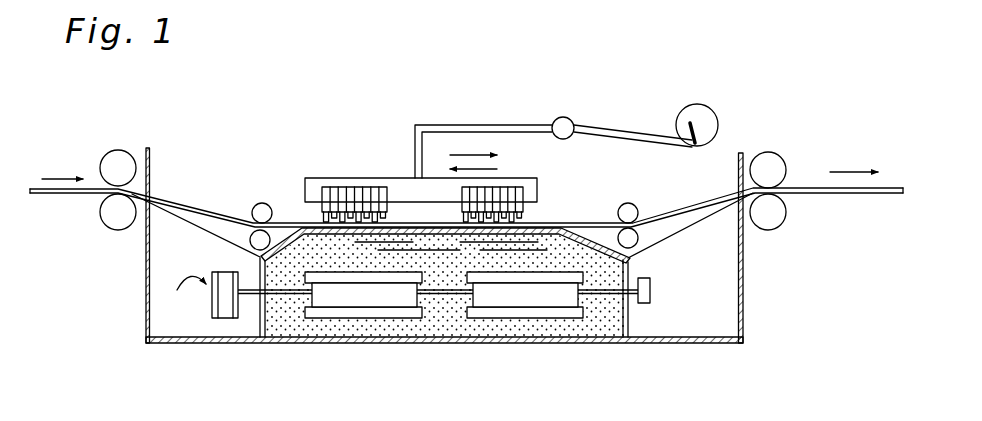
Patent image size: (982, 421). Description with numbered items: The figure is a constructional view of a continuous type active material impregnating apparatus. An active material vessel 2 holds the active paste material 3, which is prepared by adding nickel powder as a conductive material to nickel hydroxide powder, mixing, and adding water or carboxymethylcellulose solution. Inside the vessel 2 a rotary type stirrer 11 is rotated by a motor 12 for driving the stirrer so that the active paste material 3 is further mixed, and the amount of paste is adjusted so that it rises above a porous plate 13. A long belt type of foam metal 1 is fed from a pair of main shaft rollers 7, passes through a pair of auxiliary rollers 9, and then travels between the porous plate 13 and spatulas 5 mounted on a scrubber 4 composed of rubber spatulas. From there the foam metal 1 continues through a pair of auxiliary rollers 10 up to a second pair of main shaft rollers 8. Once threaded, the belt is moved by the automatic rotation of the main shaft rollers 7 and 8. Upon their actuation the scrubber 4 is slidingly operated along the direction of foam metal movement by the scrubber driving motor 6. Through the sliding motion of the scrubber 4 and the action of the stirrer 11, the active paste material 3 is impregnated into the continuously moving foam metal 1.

The foam metal 1 is at (852, 193).
The active material vessel 2 is at (743, 323).
The active paste material 3 is at (453, 322).
The scrubber 4 is at (313, 183).
The spatulas 5 is at (518, 218).
The scrubber driving motor 6 is at (707, 112).
The main shaft rollers 7 is at (117, 157).
The main shaft rollers 8 is at (780, 213).
The auxiliary rollers 9 is at (258, 207).
The auxiliary rollers 10 is at (630, 210).
The rotary type stirrer 11 is at (357, 312).
The motor 12 is at (227, 306).
The porous plate 13 is at (408, 231).